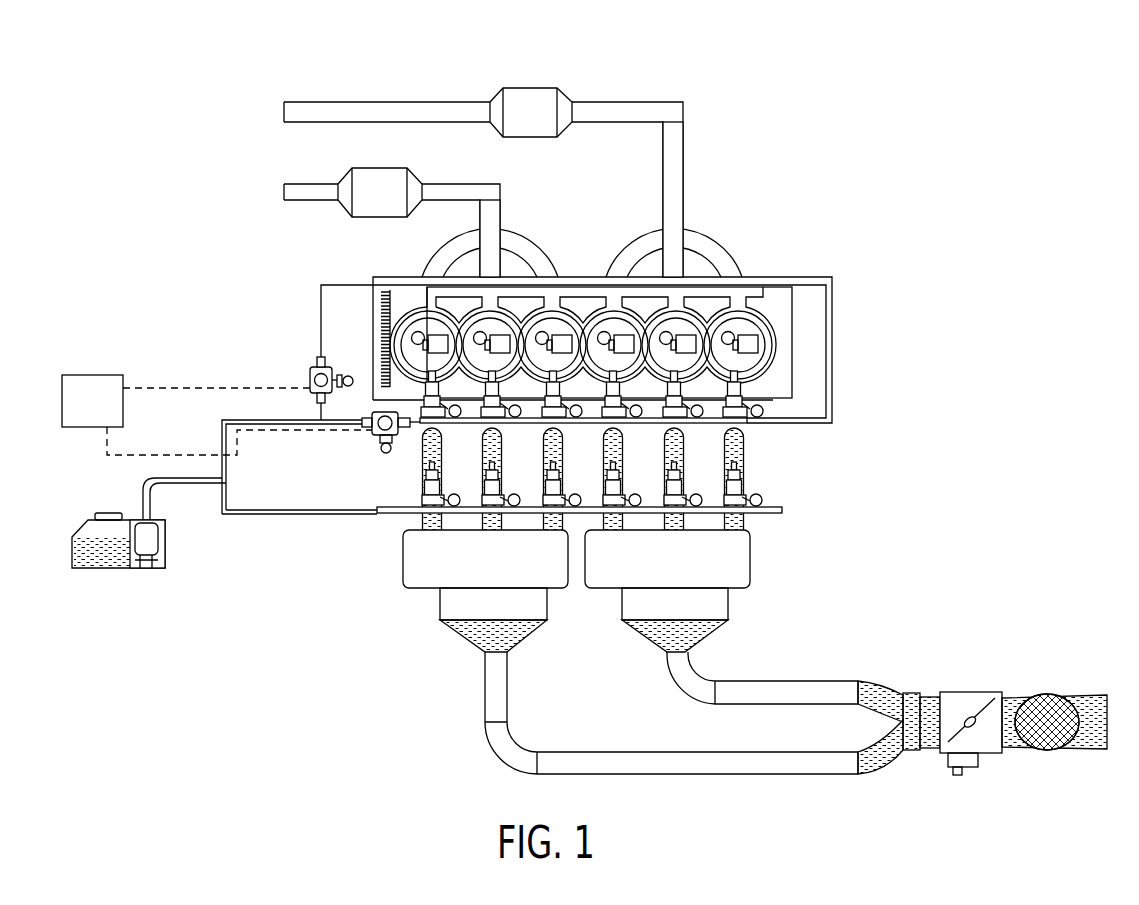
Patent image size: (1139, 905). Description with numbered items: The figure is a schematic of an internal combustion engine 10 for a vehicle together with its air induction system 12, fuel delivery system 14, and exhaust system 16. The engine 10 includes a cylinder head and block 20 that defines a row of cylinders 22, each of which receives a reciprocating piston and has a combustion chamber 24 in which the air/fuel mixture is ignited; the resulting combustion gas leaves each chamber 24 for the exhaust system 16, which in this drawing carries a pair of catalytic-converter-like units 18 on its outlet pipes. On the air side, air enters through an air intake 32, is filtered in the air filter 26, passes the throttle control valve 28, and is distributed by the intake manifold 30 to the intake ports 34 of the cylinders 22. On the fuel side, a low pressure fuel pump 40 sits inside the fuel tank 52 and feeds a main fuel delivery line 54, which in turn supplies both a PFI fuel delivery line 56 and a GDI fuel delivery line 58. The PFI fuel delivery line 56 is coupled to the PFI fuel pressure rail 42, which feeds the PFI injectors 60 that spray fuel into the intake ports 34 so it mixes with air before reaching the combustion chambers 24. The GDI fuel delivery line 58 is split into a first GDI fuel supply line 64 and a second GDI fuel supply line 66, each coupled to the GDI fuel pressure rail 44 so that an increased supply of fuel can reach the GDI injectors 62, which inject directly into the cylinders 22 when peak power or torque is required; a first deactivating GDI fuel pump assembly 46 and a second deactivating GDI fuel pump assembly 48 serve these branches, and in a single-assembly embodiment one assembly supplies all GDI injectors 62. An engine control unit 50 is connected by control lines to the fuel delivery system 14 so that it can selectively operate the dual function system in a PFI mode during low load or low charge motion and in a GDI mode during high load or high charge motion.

The internal combustion engine 10 is at (905, 132).
The air induction system 12 is at (1015, 626).
The fuel delivery system 14 is at (204, 341).
The exhaust system 16 is at (390, 78).
The catalytic converter 18 is at (532, 110).
The cylinder head and block 20 is at (778, 276).
The cylinder 22 is at (412, 325).
The combustion chamber 24 is at (415, 360).
The air filter 26 is at (1052, 700).
The throttle control valve 28 is at (977, 691).
The intake manifold 30 is at (556, 590).
The air intake 32 is at (1097, 700).
The intake port 34 is at (723, 464).
The low pressure fuel pump 40 is at (147, 553).
The PFI fuel pressure rail 42 is at (766, 515).
The GDI fuel pressure rail 44 is at (528, 428).
The first deactivating GDI fuel pump assembly 46 is at (298, 367).
The second deactivating GDI fuel pump assembly 48 is at (375, 437).
The engine control unit 50 is at (92, 375).
The fuel tank 52 is at (108, 570).
The main fuel delivery line 54 is at (190, 484).
The PFI fuel delivery line 56 is at (313, 517).
The GDI fuel delivery line 58 is at (222, 433).
The PFI injector 60 is at (607, 480).
The GDI injector 62 is at (612, 403).
The first GDI fuel supply line 64 is at (319, 292).
The second GDI fuel supply line 66 is at (333, 430).